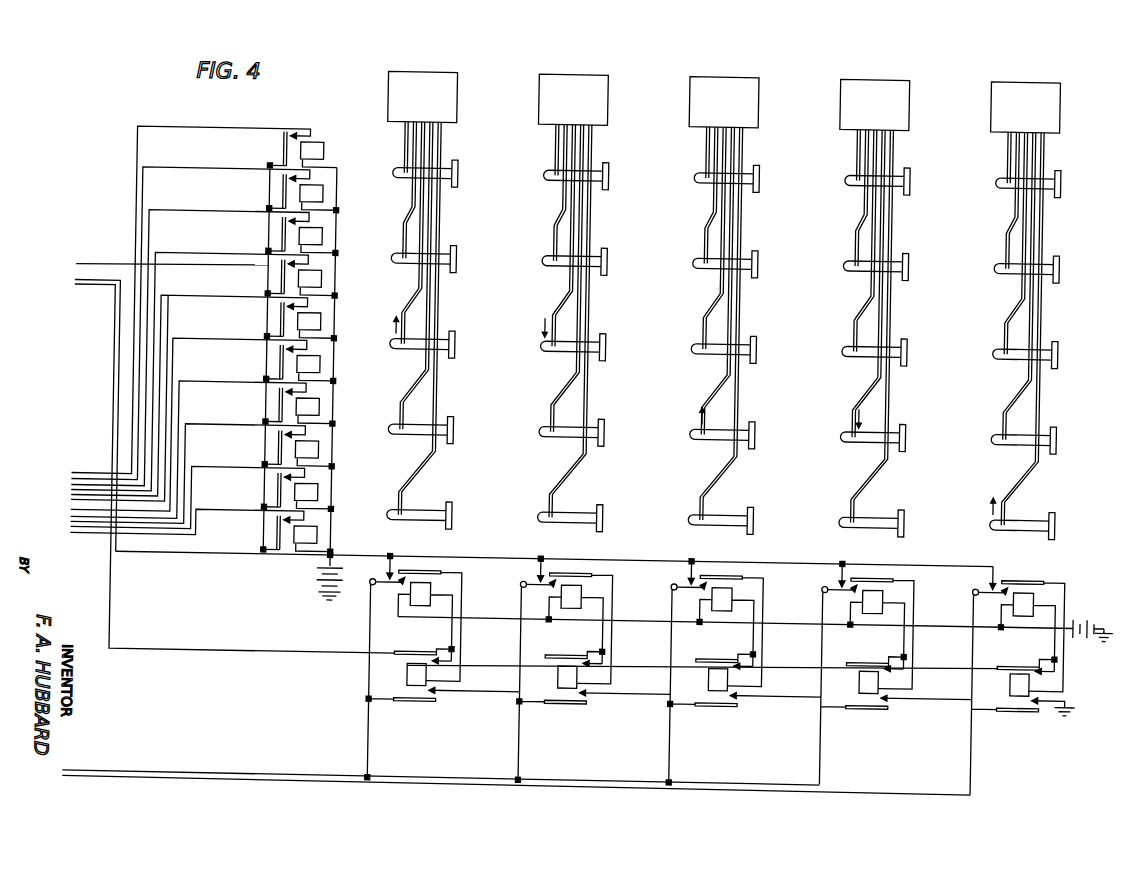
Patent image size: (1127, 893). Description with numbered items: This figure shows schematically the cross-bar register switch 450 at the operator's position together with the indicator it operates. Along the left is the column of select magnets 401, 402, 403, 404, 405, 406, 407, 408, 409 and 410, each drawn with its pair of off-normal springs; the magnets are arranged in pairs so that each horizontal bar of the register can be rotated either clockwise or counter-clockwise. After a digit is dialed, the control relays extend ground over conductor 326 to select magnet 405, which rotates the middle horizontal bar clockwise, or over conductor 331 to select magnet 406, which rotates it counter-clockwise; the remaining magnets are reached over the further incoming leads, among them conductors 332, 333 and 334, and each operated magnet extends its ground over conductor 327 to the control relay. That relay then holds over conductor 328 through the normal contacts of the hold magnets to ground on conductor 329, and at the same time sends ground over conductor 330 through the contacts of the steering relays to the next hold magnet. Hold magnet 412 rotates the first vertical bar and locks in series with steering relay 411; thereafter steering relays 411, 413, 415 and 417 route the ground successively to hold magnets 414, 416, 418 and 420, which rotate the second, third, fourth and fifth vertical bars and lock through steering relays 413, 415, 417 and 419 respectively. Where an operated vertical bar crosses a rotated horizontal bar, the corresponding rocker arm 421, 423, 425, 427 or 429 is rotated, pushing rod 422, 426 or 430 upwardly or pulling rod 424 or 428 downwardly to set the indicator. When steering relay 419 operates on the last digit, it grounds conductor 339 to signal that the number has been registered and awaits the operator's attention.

The conductor 326 is at (170, 304).
The conductor 327 is at (94, 270).
The conductor 328 is at (118, 320).
The conductor 329 is at (259, 779).
The conductor 330 is at (112, 338).
The conductor 331 is at (182, 347).
The conductor 332 is at (189, 390).
The conductor 333 is at (196, 432).
The conductor 334 is at (203, 475).
The conductor 339 is at (880, 787).
The select magnet 401 is at (318, 155).
The select magnet 402 is at (318, 198).
The select magnet 403 is at (318, 240).
The select magnet 404 is at (318, 283).
The select magnet 405 is at (318, 326).
The select magnet 406 is at (318, 368).
The select magnet 407 is at (318, 411).
The select magnet 408 is at (318, 454).
The select magnet 409 is at (318, 496).
The select magnet 410 is at (318, 539).
The steering relay 411 is at (420, 688).
The hold magnet 412 is at (423, 608).
The steering relay 413 is at (571, 688).
The hold magnet 414 is at (574, 608).
The steering relay 415 is at (722, 688).
The hold magnet 416 is at (724, 608).
The steering relay 417 is at (873, 688).
The hold magnet 418 is at (875, 608).
The steering relay 419 is at (1024, 688).
The hold magnet 420 is at (1026, 608).
The rocker arm 421 is at (444, 341).
The rod 422 is at (410, 299).
The rocker arm 423 is at (593, 342).
The rod 424 is at (566, 284).
The rocker arm 425 is at (744, 428).
The rod 426 is at (701, 412).
The rocker arm 427 is at (894, 428).
The rod 428 is at (851, 412).
The rocker arm 429 is at (1030, 515).
The rod 430 is at (1022, 475).
The register switch 450 is at (718, 284).